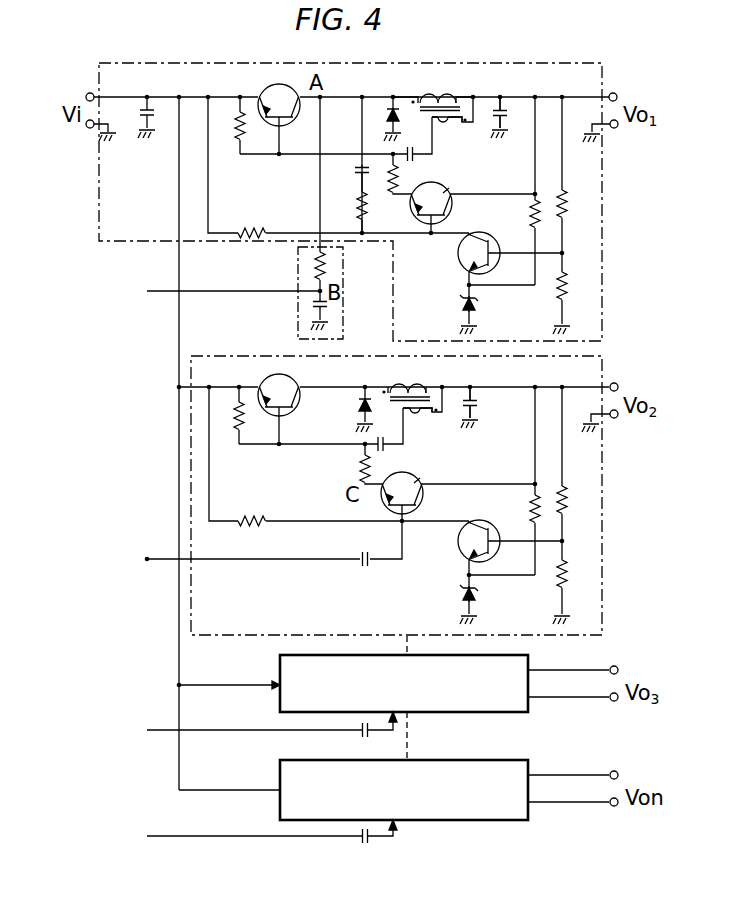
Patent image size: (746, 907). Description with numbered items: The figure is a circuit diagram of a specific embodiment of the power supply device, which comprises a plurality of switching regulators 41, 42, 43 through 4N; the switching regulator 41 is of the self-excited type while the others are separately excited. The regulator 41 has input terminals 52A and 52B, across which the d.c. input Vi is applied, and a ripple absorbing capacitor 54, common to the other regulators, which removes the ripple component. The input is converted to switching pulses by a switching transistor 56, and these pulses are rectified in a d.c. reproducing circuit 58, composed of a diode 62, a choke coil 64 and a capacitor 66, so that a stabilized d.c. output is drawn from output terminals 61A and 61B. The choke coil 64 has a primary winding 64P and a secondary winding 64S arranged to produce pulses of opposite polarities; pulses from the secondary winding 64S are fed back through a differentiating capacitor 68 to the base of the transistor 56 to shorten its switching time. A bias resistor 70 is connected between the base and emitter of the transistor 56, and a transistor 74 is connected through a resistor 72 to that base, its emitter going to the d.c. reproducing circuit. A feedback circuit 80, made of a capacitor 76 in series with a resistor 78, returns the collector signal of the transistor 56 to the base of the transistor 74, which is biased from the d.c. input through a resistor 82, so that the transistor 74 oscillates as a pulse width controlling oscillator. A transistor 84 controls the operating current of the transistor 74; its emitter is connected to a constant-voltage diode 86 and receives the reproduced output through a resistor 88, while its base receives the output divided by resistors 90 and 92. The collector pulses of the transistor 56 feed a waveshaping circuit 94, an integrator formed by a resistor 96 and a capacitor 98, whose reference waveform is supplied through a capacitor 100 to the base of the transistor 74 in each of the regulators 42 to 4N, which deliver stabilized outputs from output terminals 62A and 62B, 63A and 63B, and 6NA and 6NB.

The switching regulator 41 is at (606, 278).
The switching regulator 42 is at (604, 528).
The switching regulator 43 is at (312, 686).
The switching regulator 4N is at (312, 792).
The input terminal 52A is at (88, 93).
The input terminal 52B is at (88, 129).
The ripple absorbing capacitor 54 is at (146, 108).
The switching transistor 56 is at (268, 88).
The d.c. reproducing circuit 58 is at (470, 130).
The output terminal 61A is at (616, 93).
The output terminal 61B is at (616, 129).
The diode 62 is at (386, 115).
The output terminal 62A is at (616, 383).
The output terminal 62B is at (616, 419).
The output terminal 63A is at (617, 666).
The output terminal 63B is at (617, 701).
The output terminal 6NA is at (617, 771).
The output terminal 6NB is at (617, 806).
The choke coil 64 is at (452, 94).
The primary winding 64P is at (426, 96).
The secondary winding 64S is at (420, 157).
The capacitor 66 is at (505, 112).
The differentiating capacitor 68 is at (440, 184).
The bias resistor 70 is at (236, 140).
The resistor 72 is at (388, 185).
The transistor 74 is at (452, 205).
The capacitor 76 is at (348, 181).
The resistor 78 is at (347, 206).
The feedback circuit 80 is at (355, 230).
The resistor 82 is at (252, 366).
The transistor 84 is at (458, 254).
The constant-voltage diode 86 is at (474, 298).
The resistor 88 is at (520, 364).
The resistor 90 is at (579, 352).
The resistor 92 is at (579, 431).
The waveshaping circuit 94 is at (297, 318).
The resistor 96 is at (328, 264).
The capacitor 98 is at (330, 303).
The capacitor 100 is at (348, 856).